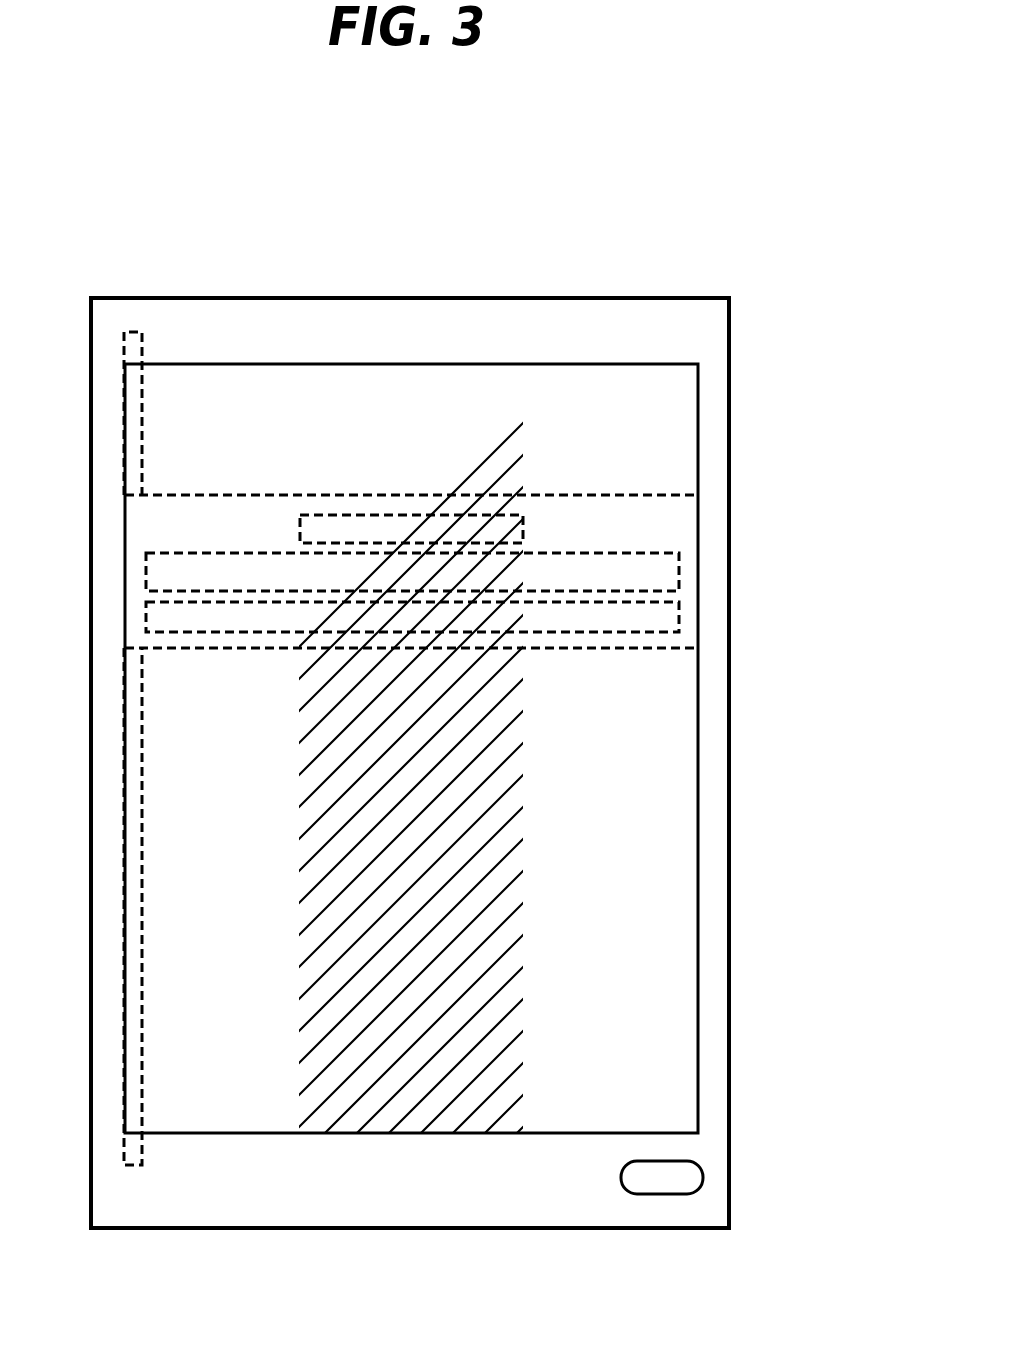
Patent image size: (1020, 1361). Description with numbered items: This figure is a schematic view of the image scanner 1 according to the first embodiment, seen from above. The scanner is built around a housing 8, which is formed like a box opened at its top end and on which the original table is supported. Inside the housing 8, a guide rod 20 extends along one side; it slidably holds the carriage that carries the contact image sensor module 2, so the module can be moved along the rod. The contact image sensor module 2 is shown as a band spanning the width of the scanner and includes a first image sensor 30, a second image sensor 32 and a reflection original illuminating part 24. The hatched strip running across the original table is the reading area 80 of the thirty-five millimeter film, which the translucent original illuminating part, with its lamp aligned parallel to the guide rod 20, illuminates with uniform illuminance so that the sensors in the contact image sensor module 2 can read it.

The image forming apparatus 1 is at (702, 254).
The contact image sensor module 2 is at (672, 485).
The housing 8 is at (622, 1229).
The guide rod 20 is at (137, 410).
The reflection original illuminating part 24 is at (681, 572).
The first image sensor 30 is at (573, 632).
The second image sensor 32 is at (528, 528).
The reading area 80 is at (397, 378).